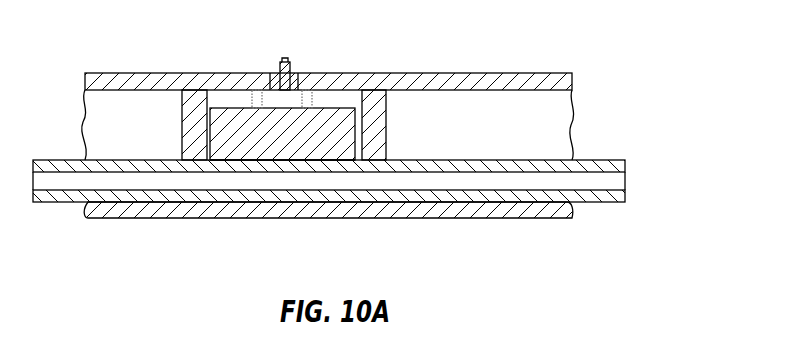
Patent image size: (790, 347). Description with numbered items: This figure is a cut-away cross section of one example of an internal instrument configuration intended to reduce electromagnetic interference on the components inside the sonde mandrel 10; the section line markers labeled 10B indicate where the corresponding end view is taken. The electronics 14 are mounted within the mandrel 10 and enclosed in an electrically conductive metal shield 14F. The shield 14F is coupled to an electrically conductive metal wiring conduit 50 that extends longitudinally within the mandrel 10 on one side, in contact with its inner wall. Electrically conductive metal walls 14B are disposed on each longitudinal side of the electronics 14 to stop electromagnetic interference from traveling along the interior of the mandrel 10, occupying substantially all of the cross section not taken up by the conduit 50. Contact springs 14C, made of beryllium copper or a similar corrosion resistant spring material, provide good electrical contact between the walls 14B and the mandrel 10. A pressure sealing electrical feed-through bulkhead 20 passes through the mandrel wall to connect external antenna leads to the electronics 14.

The mandrel 10 is at (525, 73).
The end view section 10B is at (195, 48).
The electronics 14 is at (320, 150).
The electrically conductive metal walls 14B is at (182, 123).
The contact springs 14C is at (388, 91).
The electrically conductive metal shield 14F is at (273, 150).
The electrical feed-through bulkhead 20 is at (292, 64).
The wiring conduit 50 is at (600, 160).